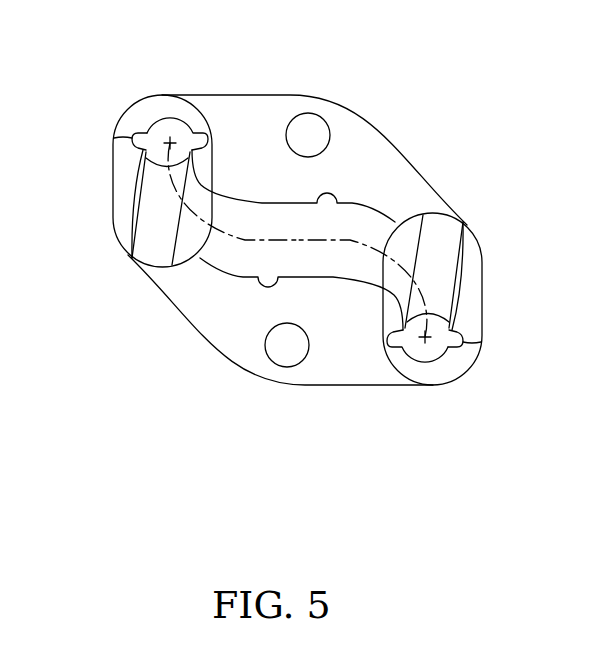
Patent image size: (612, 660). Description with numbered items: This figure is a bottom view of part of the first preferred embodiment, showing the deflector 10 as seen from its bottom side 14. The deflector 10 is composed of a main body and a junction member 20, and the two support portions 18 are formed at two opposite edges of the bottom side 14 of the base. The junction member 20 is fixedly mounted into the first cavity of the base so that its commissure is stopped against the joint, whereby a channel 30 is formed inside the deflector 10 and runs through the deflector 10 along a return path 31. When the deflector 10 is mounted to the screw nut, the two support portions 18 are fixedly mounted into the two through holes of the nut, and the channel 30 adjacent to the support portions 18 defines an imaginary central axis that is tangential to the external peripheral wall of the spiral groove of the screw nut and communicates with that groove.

The deflector 10 is at (296, 256).
The bottom side 14 is at (248, 105).
The support portions 18 is at (116, 184).
The junction member 20 is at (225, 272).
The channel 30 is at (434, 356).
The return path 31 is at (275, 243).